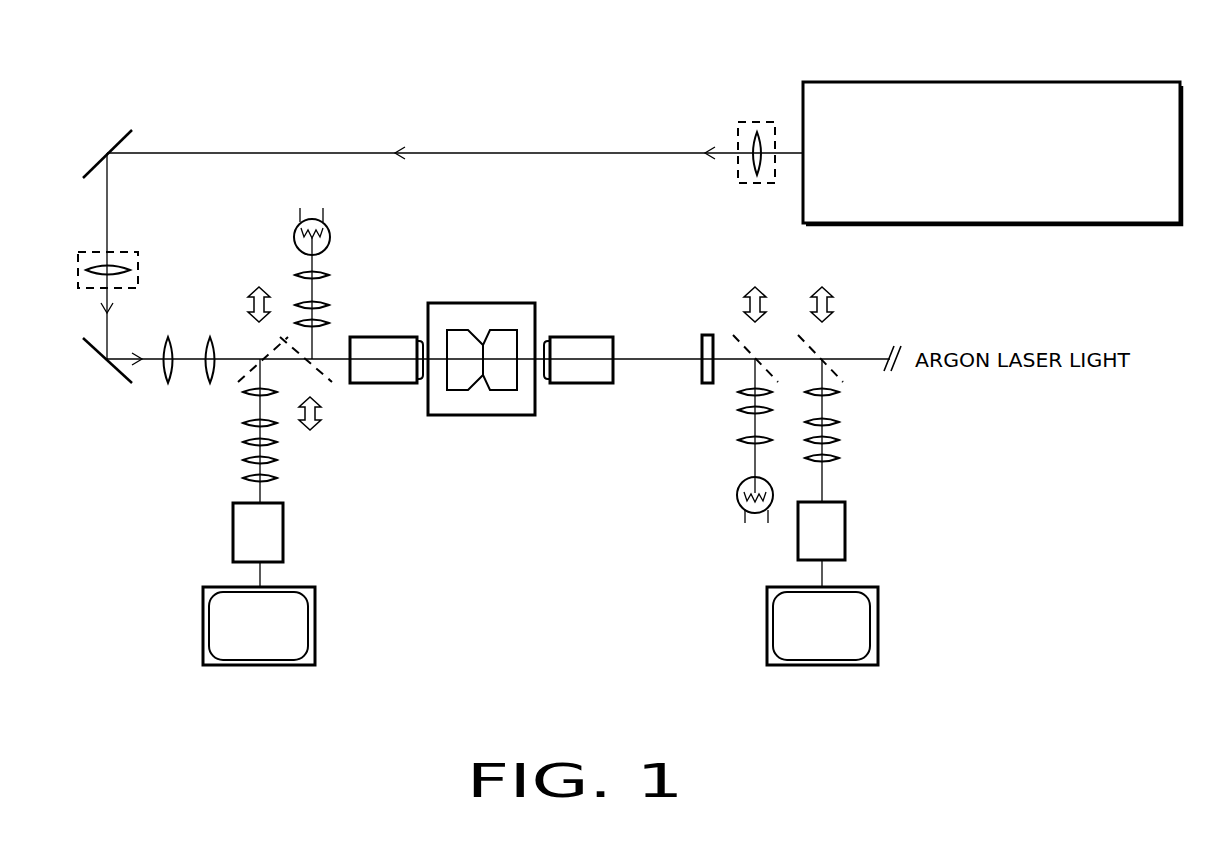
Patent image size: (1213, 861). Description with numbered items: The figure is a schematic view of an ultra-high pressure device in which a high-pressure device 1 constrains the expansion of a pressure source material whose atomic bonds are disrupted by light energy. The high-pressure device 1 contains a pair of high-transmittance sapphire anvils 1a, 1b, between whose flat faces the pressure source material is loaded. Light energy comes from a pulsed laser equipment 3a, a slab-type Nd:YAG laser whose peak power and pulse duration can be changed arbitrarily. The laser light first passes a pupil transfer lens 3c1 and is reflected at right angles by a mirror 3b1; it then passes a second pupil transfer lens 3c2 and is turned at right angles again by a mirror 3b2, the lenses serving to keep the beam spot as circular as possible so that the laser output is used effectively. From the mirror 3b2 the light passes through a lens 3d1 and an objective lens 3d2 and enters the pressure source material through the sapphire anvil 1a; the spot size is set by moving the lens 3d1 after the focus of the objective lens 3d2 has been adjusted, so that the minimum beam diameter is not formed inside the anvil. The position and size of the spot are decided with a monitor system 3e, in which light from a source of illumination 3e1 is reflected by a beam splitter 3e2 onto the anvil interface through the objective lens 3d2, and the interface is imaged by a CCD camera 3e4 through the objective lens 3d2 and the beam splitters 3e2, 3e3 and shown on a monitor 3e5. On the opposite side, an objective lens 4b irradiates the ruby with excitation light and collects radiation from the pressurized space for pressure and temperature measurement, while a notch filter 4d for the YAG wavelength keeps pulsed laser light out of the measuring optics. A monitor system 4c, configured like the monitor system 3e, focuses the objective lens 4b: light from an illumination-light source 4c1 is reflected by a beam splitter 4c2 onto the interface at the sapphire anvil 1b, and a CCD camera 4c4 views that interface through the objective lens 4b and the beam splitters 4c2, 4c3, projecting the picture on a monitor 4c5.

The high-pressure device 1 is at (490, 417).
The sapphire anvil 1a is at (458, 383).
The sapphire anvil 1b is at (503, 382).
The pulsed laser equipment 3a is at (1038, 82).
The mirror 3b1 is at (97, 157).
The mirror 3b2 is at (117, 375).
The pupil transfer lens 3c1 is at (738, 140).
The pupil transfer lens 3c2 is at (122, 252).
The lens 3d1 is at (222, 397).
The objective lens 3d2 is at (383, 377).
The monitor system 3e is at (232, 706).
The source of illumination 3e1 is at (330, 233).
The beam splitter 3e2 is at (318, 363).
The beam splitter 3e3 is at (268, 350).
The CCD camera 3e4 is at (277, 527).
The monitor 3e5 is at (315, 613).
The objective lens 4b is at (583, 333).
The monitor system 4c is at (795, 707).
The illumination-light source 4c1 is at (738, 500).
The beam splitter 4c2 is at (755, 355).
The beam splitter 4c3 is at (817, 348).
The CCD camera 4c4 is at (845, 518).
The monitor 4c5 is at (878, 612).
The notch filter 4d is at (700, 345).